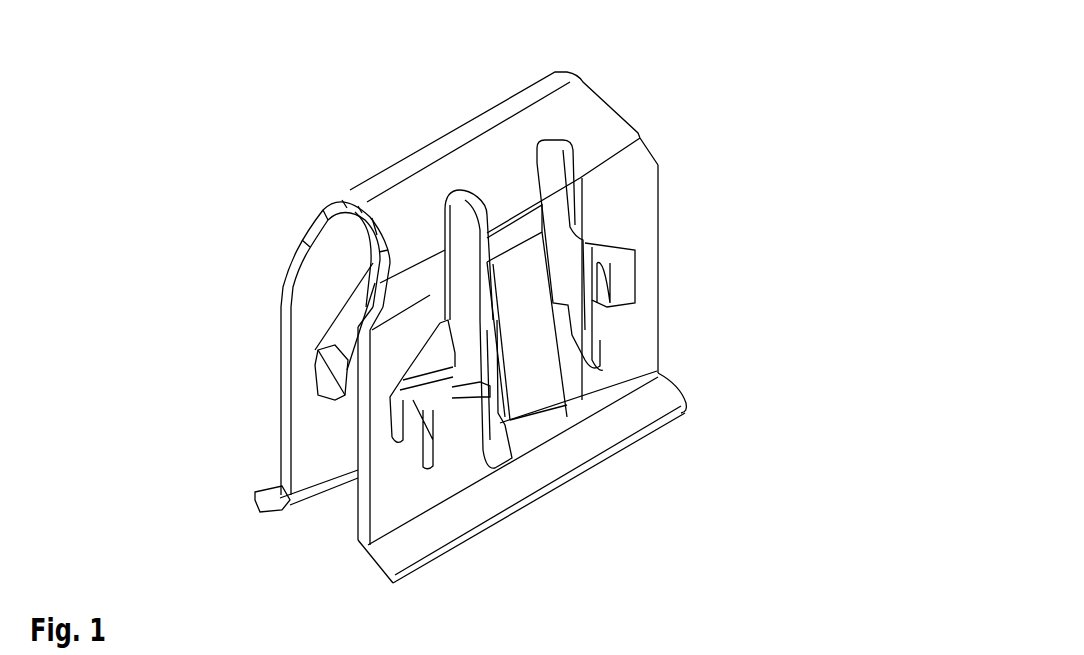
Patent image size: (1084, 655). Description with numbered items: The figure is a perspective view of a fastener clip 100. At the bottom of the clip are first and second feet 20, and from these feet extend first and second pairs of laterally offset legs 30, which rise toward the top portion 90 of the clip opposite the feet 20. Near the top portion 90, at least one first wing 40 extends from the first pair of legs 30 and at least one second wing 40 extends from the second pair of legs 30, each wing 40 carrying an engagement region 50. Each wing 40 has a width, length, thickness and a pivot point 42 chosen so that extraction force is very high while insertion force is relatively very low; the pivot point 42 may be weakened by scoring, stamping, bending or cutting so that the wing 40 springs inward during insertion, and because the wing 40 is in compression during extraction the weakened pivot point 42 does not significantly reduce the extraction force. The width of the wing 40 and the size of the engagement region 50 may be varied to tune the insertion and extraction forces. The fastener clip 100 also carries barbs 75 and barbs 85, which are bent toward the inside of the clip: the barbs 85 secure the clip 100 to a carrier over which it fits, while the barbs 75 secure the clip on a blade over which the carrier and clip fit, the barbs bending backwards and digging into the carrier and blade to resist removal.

The fastener clip 100 is at (826, 76).
The top portion 90 is at (577, 112).
The laterally offset legs 30 is at (317, 430).
The pivot point 42 is at (497, 240).
The wing 40 is at (530, 340).
The engagement region 50 is at (527, 440).
The feet 20 is at (655, 410).
The barbs 75 is at (568, 325).
The barbs 85 is at (325, 380).